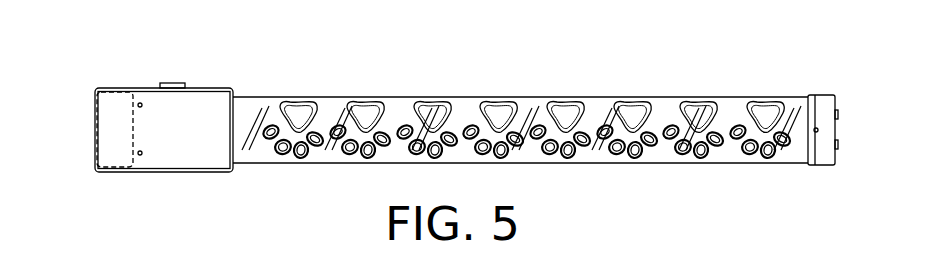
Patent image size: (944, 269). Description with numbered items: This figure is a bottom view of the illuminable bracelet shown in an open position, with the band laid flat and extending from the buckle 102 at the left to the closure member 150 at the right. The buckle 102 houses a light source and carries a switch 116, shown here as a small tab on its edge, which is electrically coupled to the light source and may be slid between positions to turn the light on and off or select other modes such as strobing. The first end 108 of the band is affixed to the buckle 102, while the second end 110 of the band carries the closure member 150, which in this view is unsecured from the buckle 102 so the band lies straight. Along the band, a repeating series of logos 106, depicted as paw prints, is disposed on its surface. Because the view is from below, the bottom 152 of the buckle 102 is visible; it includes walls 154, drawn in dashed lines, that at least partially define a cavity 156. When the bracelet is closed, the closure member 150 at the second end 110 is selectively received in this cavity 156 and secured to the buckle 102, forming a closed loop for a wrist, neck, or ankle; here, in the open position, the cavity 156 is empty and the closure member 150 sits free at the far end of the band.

The buckle 102 is at (202, 174).
The logos 106 is at (372, 105).
The first end 108 is at (242, 112).
The second end 110 is at (803, 150).
The switch 116 is at (175, 82).
The closure member 150 is at (823, 86).
The bottom 152 is at (177, 135).
The walls 154 is at (110, 92).
The cavity 156 is at (107, 143).